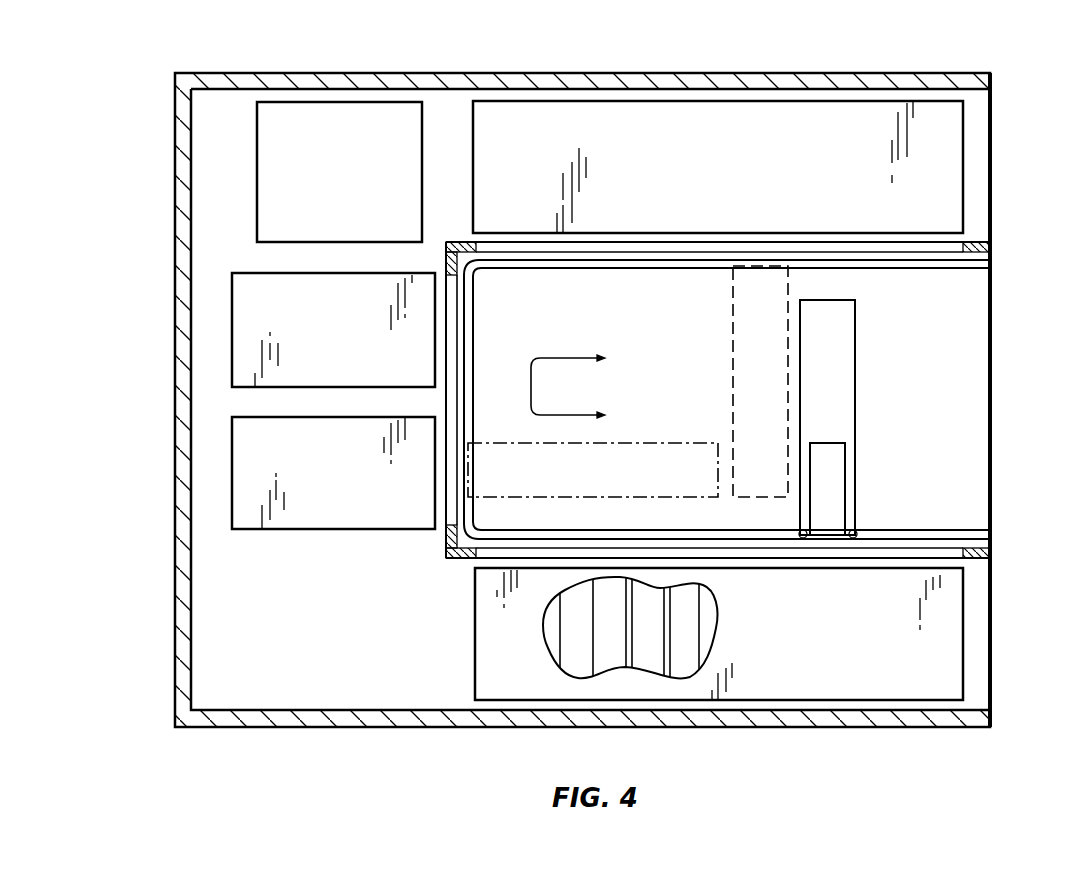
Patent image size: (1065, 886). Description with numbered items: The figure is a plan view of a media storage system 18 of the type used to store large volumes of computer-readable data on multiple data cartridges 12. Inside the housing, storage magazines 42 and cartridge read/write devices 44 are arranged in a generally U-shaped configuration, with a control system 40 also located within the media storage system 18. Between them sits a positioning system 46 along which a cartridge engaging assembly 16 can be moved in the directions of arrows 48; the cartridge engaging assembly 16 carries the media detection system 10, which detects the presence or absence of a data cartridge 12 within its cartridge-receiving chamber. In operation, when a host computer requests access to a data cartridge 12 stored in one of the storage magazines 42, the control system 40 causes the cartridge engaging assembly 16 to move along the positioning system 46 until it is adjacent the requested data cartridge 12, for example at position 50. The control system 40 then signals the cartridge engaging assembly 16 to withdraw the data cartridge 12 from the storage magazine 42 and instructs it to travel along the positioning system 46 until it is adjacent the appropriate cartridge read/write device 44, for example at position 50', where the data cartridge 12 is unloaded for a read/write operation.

The media detection system 10 is at (836, 332).
The data cartridge 12 is at (632, 650).
The cartridge engaging assembly 16 is at (859, 365).
The media storage system 18 is at (127, 67).
The control system 40 is at (257, 147).
The storage magazine 42 is at (966, 158).
The cartridge read/write device 44 is at (232, 347).
The positioning system 46 is at (908, 527).
The arrows 48 is at (553, 356).
The position 50 is at (855, 419).
The position 50' is at (593, 444).